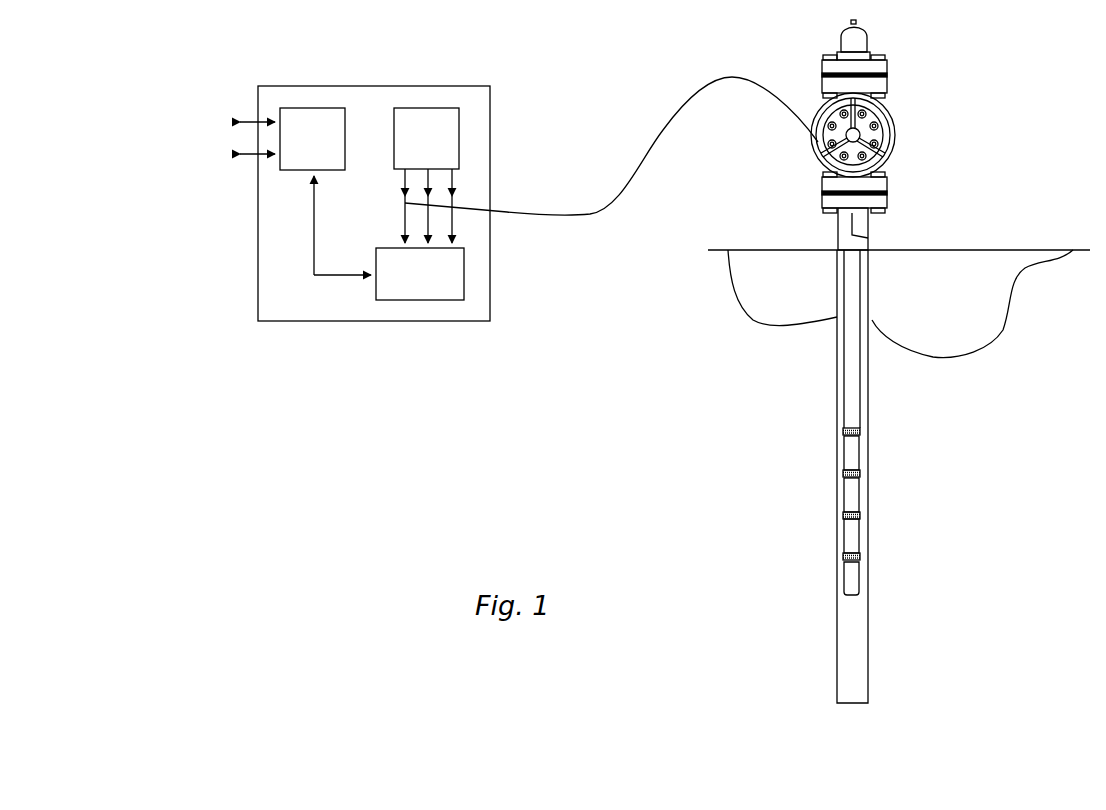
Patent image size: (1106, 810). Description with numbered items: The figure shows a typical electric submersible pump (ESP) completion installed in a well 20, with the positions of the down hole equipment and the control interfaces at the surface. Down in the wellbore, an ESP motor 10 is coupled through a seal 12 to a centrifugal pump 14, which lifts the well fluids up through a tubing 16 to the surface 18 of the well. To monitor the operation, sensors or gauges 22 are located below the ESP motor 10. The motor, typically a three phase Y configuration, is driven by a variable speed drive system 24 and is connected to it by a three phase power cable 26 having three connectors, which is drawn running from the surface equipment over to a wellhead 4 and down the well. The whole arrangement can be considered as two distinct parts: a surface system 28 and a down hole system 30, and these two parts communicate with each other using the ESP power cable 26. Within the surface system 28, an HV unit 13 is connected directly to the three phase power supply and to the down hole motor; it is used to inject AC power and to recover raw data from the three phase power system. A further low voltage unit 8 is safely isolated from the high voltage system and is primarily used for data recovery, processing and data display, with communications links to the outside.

The wellhead 4 is at (810, 165).
The low voltage unit 8 is at (320, 108).
The ESP motor 10 is at (860, 542).
The seal 12 is at (858, 502).
The HV unit 13 is at (425, 300).
The centrifugal pump 14 is at (860, 458).
The tubing 16 is at (860, 333).
The surface 18 is at (968, 244).
The well 20 is at (837, 405).
The sensors or gauges 22 is at (860, 583).
The variable speed drive system 24 is at (413, 102).
The three phase power cable 26 is at (663, 130).
The surface system 28 is at (310, 338).
The down hole system 30 is at (1017, 468).